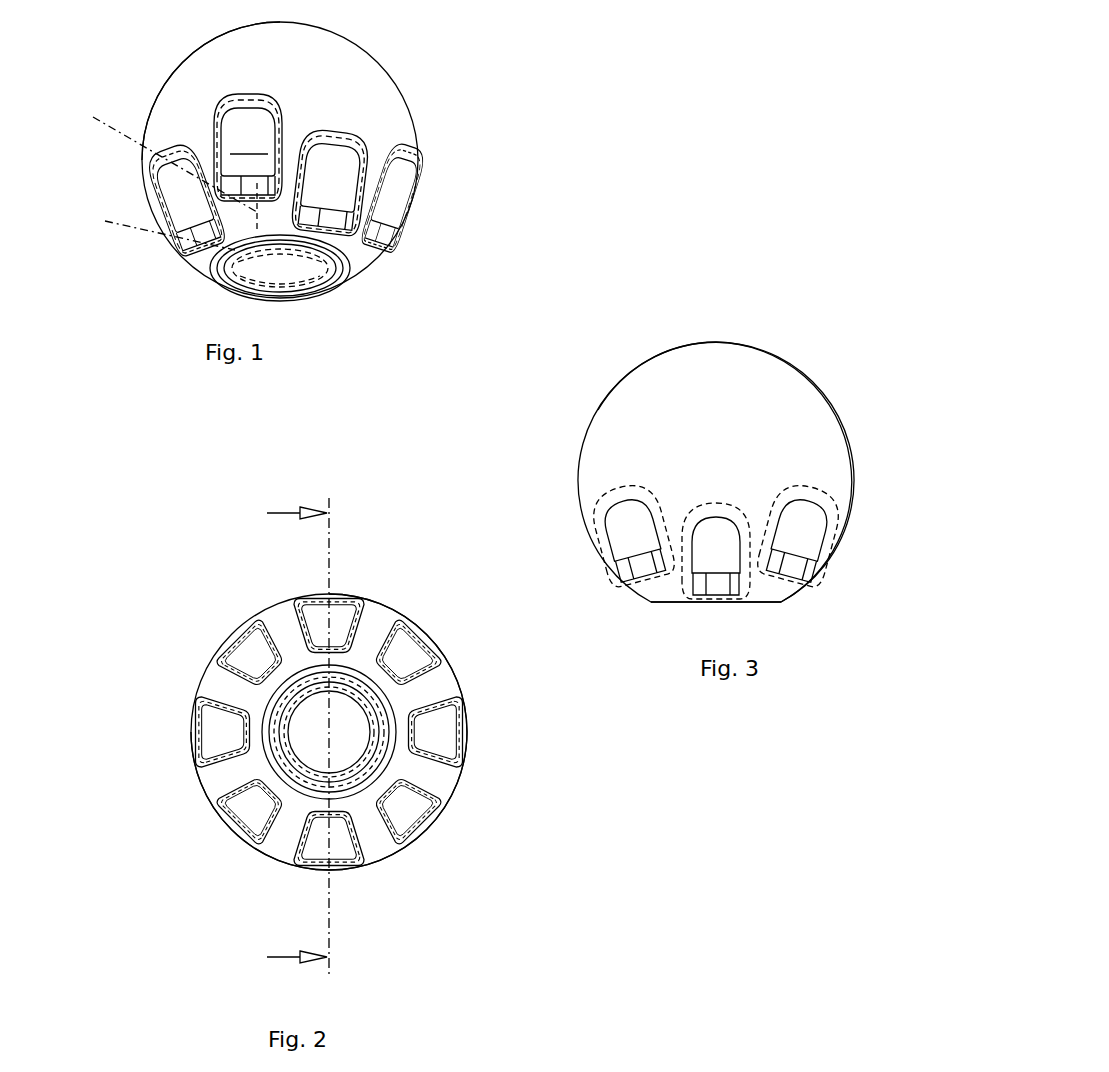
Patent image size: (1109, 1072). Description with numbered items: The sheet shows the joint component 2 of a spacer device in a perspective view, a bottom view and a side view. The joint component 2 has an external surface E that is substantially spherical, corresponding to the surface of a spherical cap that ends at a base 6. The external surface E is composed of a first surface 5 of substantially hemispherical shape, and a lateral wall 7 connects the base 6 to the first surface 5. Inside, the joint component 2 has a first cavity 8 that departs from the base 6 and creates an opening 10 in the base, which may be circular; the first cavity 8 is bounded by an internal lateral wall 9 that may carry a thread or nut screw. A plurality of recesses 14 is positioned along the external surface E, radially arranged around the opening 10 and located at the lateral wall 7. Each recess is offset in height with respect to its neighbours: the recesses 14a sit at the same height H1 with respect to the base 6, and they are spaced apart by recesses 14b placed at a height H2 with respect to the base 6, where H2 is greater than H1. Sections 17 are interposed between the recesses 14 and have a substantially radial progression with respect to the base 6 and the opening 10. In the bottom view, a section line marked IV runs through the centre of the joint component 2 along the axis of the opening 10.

In FIG. 1, the joint component 2 is at (467, 135).
In FIG. 2, the joint component 2 is at (477, 808).
In FIG. 3, the joint component 2 is at (815, 367).
In FIG. 1, the external surface E is at (158, 104).
In FIG. 3, the external surface E is at (790, 463).
In FIG. 3, the first surface 5 is at (597, 410).
In FIG. 3, the base 6 is at (768, 602).
In FIG. 2, the lateral wall 7 is at (225, 778).
In FIG. 3, the lateral wall 7 is at (833, 553).
In FIG. 1, the first cavity 8 is at (265, 283).
In FIG. 2, the first cavity 8 is at (345, 749).
In FIG. 1, the internal lateral wall 9 is at (243, 268).
In FIG. 2, the internal lateral wall 9 is at (378, 712).
In FIG. 2, the opening 10 is at (267, 702).
In FIG. 2, the recesses 14 is at (313, 618).
In FIG. 3, the recesses 14 is at (632, 522).
In FIG. 1, the recesses at first height 14a is at (190, 198).
In FIG. 1, the recesses at second height 14b is at (393, 181).
In FIG. 2, the sections 17 is at (378, 612).
In FIG. 1, the height H1 is at (148, 230).
In FIG. 1, the height H2 is at (148, 168).
In FIG. 2, the section line IV is at (270, 736).